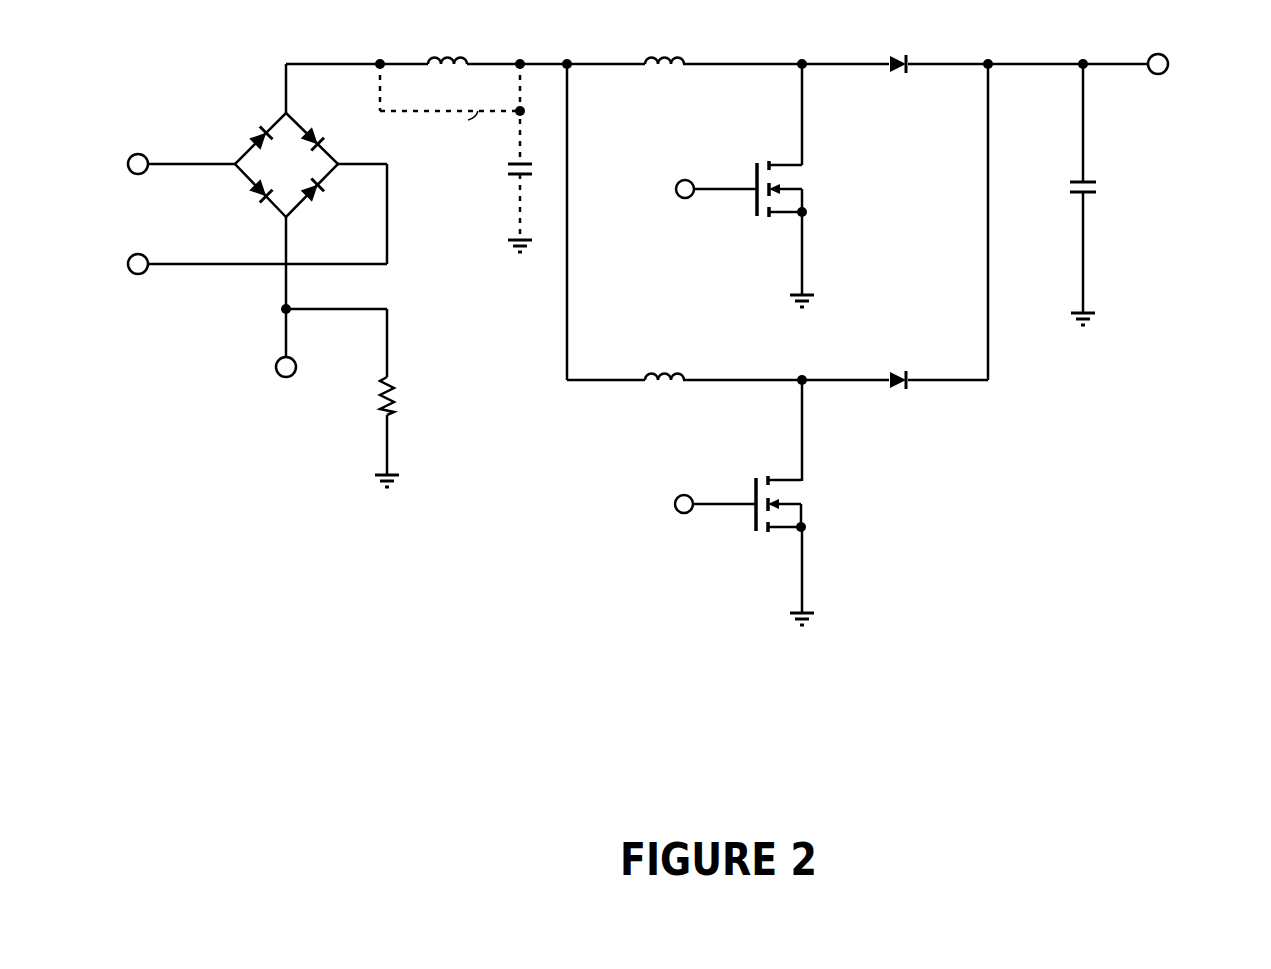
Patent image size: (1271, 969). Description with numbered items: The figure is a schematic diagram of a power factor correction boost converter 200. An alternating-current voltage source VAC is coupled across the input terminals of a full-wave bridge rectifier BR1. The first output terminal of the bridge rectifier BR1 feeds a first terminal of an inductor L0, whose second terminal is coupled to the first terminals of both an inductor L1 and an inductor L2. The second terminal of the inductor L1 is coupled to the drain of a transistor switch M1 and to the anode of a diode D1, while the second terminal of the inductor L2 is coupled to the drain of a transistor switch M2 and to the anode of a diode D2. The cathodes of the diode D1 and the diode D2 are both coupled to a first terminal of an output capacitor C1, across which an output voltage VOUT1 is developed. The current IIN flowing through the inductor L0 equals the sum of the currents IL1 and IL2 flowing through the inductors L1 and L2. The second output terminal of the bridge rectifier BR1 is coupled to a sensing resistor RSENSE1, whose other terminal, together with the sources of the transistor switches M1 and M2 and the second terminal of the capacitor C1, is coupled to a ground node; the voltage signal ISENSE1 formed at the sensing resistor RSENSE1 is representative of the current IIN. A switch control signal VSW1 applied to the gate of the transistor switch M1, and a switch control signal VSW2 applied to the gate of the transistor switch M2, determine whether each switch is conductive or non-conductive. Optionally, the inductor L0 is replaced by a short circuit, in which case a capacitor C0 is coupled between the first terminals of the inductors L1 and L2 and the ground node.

The power factor correction (PFC) boost converter 200 is at (952, 596).
The full-wave bridge rectifier BR1 is at (268, 160).
The alternating-current voltage source VAC is at (249, 214).
The inductor L0 is at (448, 37).
The capacitor C0 is at (450, 158).
The input current IIN is at (410, 362).
The voltage signal ISENSE1 is at (273, 390).
The sensing resistor RSENSE1 is at (450, 432).
The inductor L1 is at (666, 39).
The current IL1 is at (684, 85).
The diode D1 is at (902, 47).
The transistor switch M1 is at (765, 234).
The switch control signal VSW1 is at (691, 152).
The inductor L2 is at (666, 352).
The current IL2 is at (684, 398).
The diode D2 is at (901, 363).
The transistor switch M2 is at (765, 550).
The switch control signal VSW2 is at (690, 470).
The output capacitor C1 is at (1108, 194).
The output voltage VOUT1 is at (1209, 66).